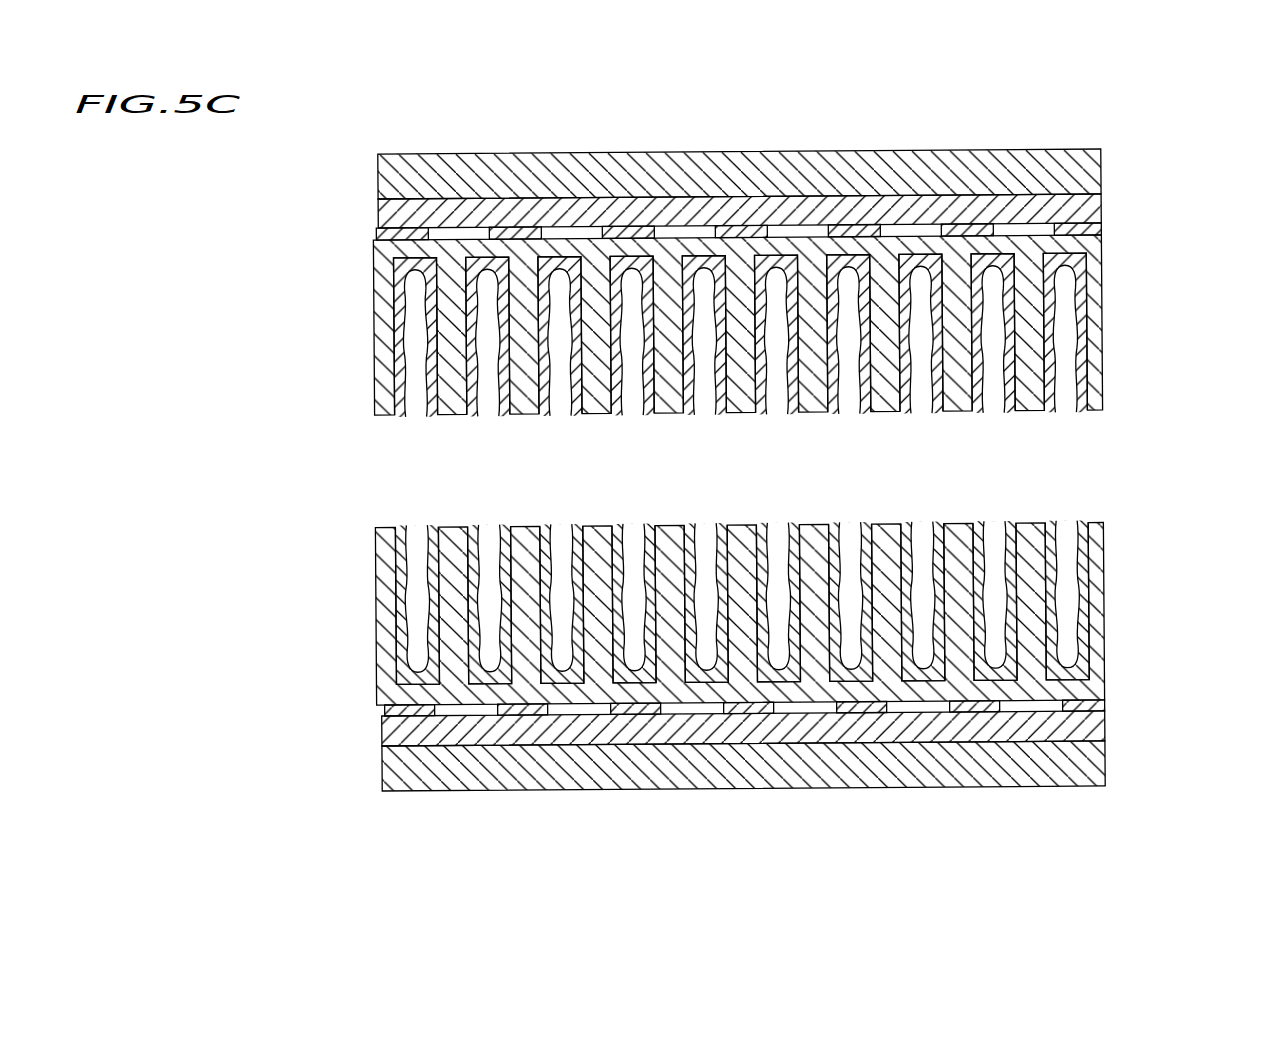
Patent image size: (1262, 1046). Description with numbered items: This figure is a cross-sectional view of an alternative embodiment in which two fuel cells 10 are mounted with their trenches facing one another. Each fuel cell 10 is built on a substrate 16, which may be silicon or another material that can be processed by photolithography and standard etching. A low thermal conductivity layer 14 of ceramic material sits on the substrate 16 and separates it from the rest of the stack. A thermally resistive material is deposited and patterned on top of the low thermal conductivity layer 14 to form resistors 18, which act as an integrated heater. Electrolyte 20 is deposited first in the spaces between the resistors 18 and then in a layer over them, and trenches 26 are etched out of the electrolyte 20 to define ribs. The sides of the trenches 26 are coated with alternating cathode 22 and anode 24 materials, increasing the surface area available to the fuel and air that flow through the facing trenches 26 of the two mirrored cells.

The fuel cell 10 is at (772, 471).
The low thermal conductivity layer 14 is at (1105, 210).
The substrate 16 is at (1105, 157).
The resistors 18 is at (457, 231).
The electrolyte 20 is at (377, 249).
The cathode 22 is at (727, 468).
The anode 24 is at (741, 468).
The trenches 26 is at (747, 468).